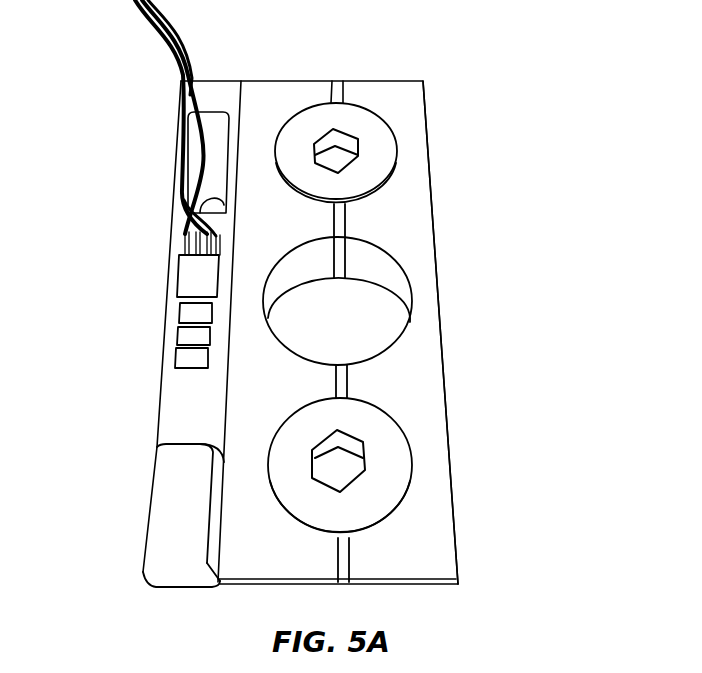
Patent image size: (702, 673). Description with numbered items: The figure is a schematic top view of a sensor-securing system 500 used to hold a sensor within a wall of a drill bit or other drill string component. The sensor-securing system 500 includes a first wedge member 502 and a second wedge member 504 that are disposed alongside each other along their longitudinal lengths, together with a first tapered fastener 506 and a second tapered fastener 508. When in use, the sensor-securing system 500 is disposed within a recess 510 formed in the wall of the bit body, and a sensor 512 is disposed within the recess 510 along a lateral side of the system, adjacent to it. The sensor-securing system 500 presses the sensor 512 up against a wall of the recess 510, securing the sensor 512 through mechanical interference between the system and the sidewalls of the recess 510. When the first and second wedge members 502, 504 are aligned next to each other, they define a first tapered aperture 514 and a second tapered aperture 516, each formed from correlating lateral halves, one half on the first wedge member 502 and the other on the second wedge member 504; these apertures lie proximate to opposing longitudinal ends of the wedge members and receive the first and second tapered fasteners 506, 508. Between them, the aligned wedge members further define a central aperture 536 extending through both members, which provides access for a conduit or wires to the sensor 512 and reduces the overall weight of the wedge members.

The sensor-securing system 500 is at (460, 104).
The first wedge member 502 is at (268, 97).
The second wedge member 504 is at (385, 97).
The first tapered fastener 506 is at (380, 152).
The second tapered fastener 508 is at (387, 448).
The recess 510 is at (166, 362).
The sensor 512 is at (177, 512).
The first tapered aperture 514 is at (362, 208).
The second tapered aperture 516 is at (367, 537).
The central aperture 536 is at (397, 255).